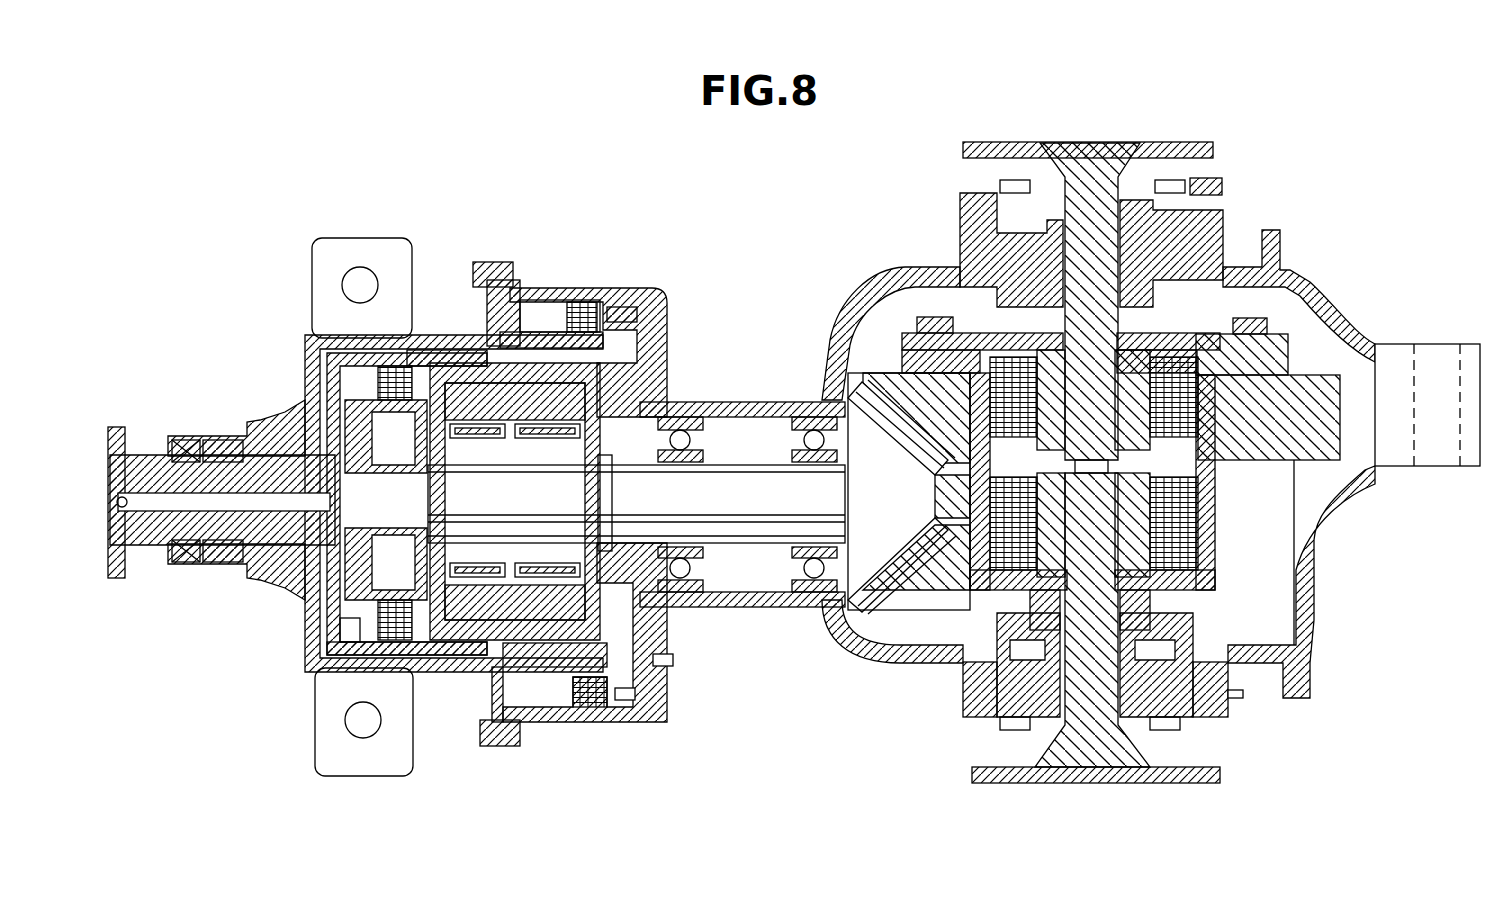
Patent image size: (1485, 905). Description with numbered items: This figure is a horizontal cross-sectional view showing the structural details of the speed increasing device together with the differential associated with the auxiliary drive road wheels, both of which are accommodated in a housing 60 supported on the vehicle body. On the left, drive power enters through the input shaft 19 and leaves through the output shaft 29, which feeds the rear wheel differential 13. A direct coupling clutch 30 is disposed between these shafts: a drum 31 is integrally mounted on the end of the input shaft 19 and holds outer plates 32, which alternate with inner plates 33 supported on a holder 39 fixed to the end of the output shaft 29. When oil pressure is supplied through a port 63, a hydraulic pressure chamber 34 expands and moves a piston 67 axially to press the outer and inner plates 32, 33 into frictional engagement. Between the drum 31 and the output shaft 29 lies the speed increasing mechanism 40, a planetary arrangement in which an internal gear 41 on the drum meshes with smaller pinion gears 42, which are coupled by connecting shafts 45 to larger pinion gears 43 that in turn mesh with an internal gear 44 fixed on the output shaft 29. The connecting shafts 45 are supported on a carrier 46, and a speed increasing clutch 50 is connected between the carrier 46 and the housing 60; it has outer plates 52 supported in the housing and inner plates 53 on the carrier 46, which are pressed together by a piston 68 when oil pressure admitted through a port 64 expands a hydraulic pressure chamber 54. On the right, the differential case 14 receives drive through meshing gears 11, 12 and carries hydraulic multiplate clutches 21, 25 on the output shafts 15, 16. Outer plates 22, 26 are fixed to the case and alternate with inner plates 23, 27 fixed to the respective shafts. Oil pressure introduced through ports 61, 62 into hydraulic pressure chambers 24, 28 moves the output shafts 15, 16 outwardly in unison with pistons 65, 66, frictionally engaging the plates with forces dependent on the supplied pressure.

The meshing gear 11 is at (900, 572).
The meshing gear 12 is at (852, 376).
The rear wheel differential 13 is at (1330, 562).
The differential case 14 is at (1216, 488).
The output shaft 15 is at (1106, 745).
The output shaft 16 is at (1090, 176).
The input shaft 19 is at (224, 456).
The hydraulic multiplate clutch 21 is at (1003, 590).
The outer plates 22 is at (988, 520).
The inner plates 23 is at (1198, 532).
The hydraulic pressure chamber 24 is at (1200, 720).
The hydraulic multiplate clutch 25 is at (1200, 340).
The outer plates 26 is at (1215, 382).
The inner plates 27 is at (992, 346).
The hydraulic pressure chamber 28 is at (986, 222).
The output shaft 29 is at (762, 530).
The direct coupling clutch 30 is at (412, 340).
The drum 31 is at (318, 346).
The outer plates 32 is at (386, 419).
The inner plates 33 is at (398, 650).
The hydraulic pressure chamber 34 is at (300, 598).
The holder 39 is at (418, 586).
The speed increasing mechanism 40 is at (541, 318).
The internal gear 41 is at (462, 376).
The smaller pinion gears 42 is at (470, 440).
The larger pinion gears 43 is at (545, 440).
The internal gear 44 is at (532, 662).
The connecting shafts 45 is at (618, 396).
The carrier 46 is at (506, 306).
The speed increasing clutch 50 is at (616, 310).
The outer plates 52 is at (581, 304).
The inner plates 53 is at (590, 712).
The hydraulic pressure chamber 54 is at (652, 308).
The housing 60 is at (848, 640).
The port 61 is at (1230, 706).
The port 62 is at (1225, 218).
The port 63 is at (240, 440).
The port 64 is at (672, 660).
The piston 65 is at (1008, 708).
The piston 66 is at (1188, 194).
The piston 67 is at (352, 630).
The piston 68 is at (660, 694).